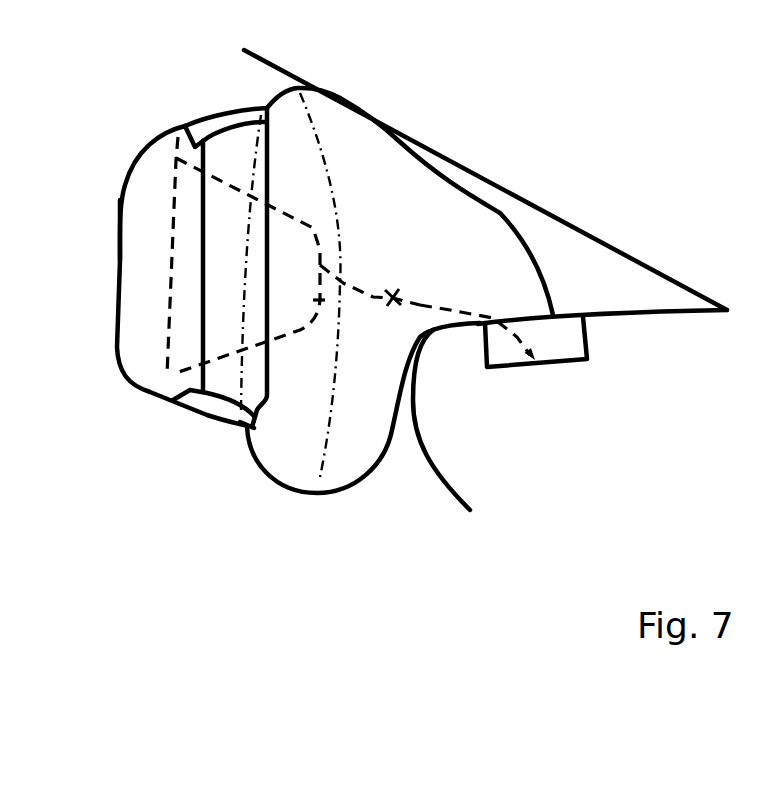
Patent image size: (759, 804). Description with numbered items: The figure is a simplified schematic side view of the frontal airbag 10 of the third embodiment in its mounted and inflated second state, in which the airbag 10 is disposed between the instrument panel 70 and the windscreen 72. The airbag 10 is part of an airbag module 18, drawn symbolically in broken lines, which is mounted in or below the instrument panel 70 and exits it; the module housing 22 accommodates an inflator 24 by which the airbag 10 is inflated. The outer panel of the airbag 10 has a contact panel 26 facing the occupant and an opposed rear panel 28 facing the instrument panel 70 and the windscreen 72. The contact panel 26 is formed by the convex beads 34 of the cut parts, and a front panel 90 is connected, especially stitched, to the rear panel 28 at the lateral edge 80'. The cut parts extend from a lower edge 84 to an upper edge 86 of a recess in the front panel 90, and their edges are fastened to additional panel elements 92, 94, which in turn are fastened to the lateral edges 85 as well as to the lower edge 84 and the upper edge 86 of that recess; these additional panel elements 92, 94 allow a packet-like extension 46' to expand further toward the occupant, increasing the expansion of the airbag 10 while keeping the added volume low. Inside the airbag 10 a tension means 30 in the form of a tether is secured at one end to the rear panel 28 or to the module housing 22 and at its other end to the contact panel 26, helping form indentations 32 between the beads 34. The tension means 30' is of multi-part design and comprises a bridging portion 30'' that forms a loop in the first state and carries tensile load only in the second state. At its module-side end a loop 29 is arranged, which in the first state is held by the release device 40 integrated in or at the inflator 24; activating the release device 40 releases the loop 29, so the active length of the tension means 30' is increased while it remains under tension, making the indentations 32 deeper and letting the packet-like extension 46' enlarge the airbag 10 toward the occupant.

The airbag 10 is at (139, 342).
The airbag module 18 is at (583, 371).
The module housing 22 is at (587, 360).
The inflator 24 is at (540, 395).
The contact panel 26 is at (110, 240).
The rear panel 28 is at (347, 440).
The loop 29 is at (410, 292).
The tension means 30 is at (336, 243).
The tension means 30' is at (371, 402).
The bridging portion 30'' is at (475, 376).
The indentation 32 is at (170, 210).
The convex bead 34 is at (137, 290).
The release device 40 is at (530, 357).
The packet-like extension 46' is at (197, 92).
The instrument panel 70 is at (667, 313).
The windscreen 72 is at (667, 275).
The lateral edge 80' is at (282, 309).
The lower edge 84 is at (238, 430).
The lateral edge 85 is at (280, 255).
The upper edge 86 is at (282, 108).
The front panel 90 is at (303, 473).
The additional panel element 92 is at (183, 128).
The additional panel element 94 is at (227, 262).